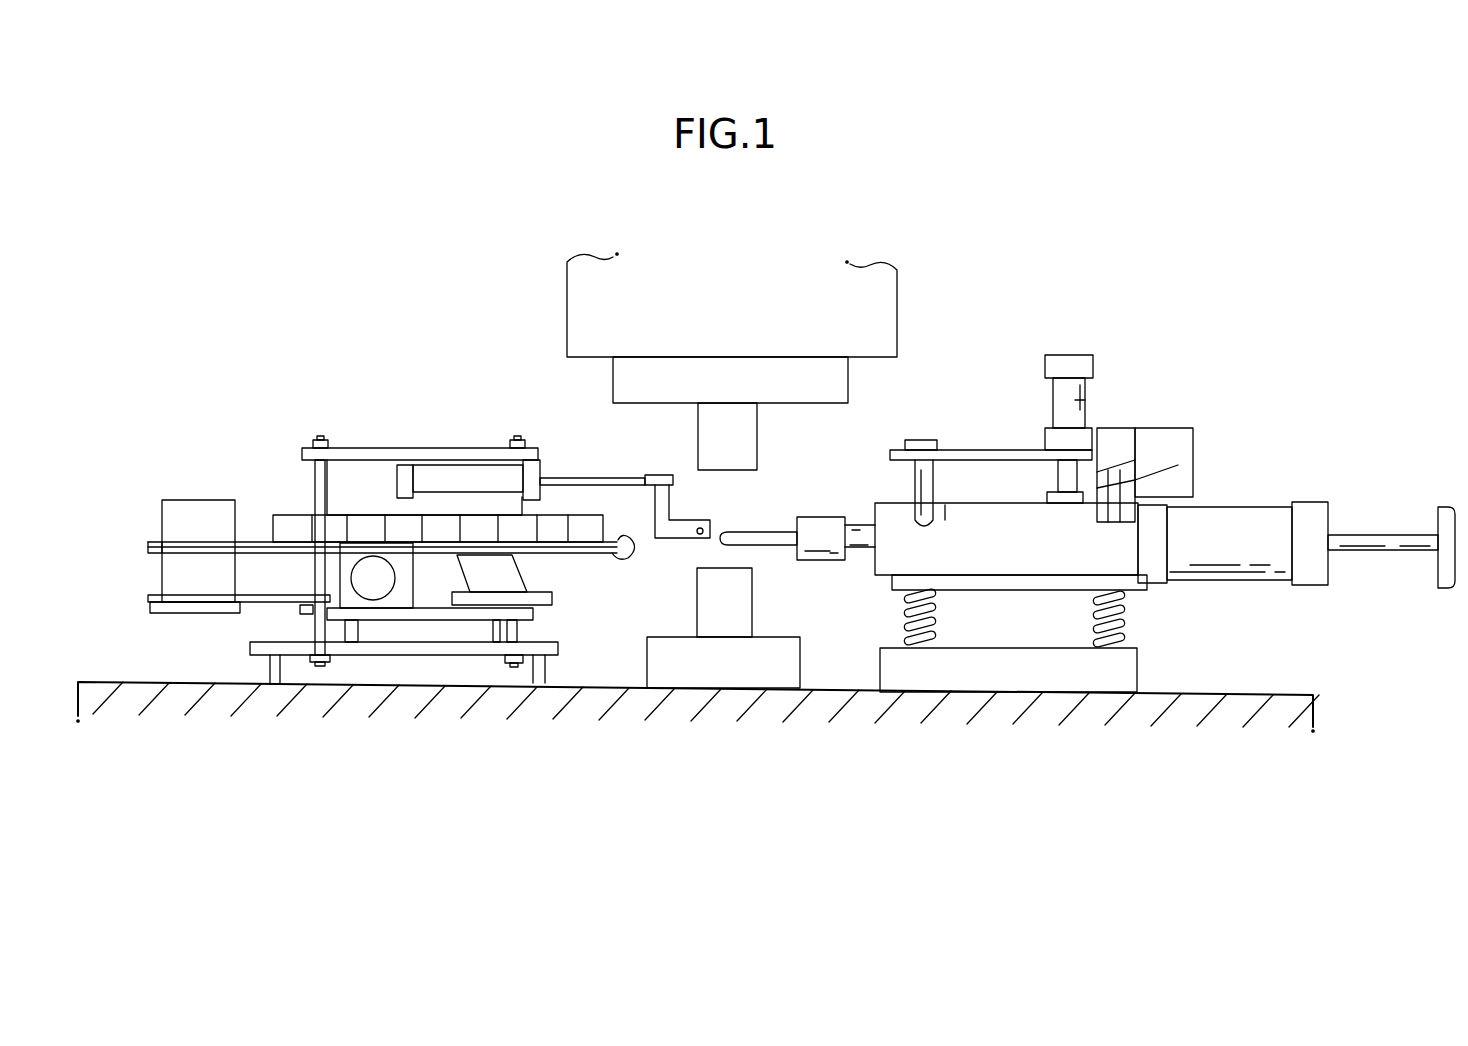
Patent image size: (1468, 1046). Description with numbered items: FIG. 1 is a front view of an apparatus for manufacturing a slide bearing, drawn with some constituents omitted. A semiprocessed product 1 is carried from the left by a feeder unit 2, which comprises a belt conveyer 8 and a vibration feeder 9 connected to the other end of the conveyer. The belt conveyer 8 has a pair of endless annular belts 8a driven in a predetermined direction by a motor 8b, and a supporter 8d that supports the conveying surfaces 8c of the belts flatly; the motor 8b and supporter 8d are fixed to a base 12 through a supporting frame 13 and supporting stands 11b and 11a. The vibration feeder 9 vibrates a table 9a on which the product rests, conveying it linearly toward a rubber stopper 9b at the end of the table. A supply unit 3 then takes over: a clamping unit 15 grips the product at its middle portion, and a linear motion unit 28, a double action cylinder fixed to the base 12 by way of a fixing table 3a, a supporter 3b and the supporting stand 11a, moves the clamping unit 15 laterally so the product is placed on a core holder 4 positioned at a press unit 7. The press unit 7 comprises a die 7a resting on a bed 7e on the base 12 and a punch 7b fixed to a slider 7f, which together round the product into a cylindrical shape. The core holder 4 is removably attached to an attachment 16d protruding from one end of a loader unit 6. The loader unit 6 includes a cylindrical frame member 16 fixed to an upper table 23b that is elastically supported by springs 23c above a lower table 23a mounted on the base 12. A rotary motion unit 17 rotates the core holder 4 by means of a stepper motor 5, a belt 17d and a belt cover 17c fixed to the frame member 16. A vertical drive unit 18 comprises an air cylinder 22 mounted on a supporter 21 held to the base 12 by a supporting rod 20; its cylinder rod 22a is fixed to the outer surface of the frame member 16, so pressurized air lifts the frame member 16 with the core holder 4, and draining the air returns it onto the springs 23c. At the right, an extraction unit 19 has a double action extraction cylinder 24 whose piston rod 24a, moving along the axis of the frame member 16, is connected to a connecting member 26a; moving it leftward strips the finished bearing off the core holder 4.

The semiprocessed product 1 is at (250, 523).
The feeder unit 2 is at (180, 553).
The supply unit 3 is at (488, 450).
The fixing table 3a is at (350, 455).
The supporter 3b is at (318, 490).
The core holder 4 is at (745, 533).
The stepper motor 5 is at (1188, 431).
The loader unit 6 is at (1000, 450).
The press unit 7 is at (822, 253).
The die 7a is at (752, 592).
The punch 7b is at (710, 440).
The bed 7e is at (735, 660).
The slider 7f is at (628, 383).
The belt conveyer 8 is at (152, 611).
The endless annular belts 8a is at (148, 598).
The motor 8b is at (400, 600).
The conveying surfaces 8c is at (152, 543).
The supporter 8d is at (148, 550).
The vibration feeder 9 is at (526, 577).
The table 9a is at (590, 560).
The stopper 9b is at (632, 548).
The supporting stand 11a is at (353, 650).
The supporting stand 11b is at (305, 615).
The base 12 is at (207, 693).
The supporting frame 13 is at (197, 560).
The clamping unit 15 is at (683, 520).
The frame member 16 is at (937, 513).
The attachment 16d is at (812, 527).
The rotary motion unit 17 is at (1165, 427).
The belt cover 17c is at (1113, 440).
The belt 17d is at (1178, 465).
The vertical drive unit 18 is at (1068, 354).
The extraction unit 19 is at (1305, 502).
The supporting rod 20 is at (917, 490).
The supporter 21 is at (948, 517).
The air cylinder 22 is at (1080, 403).
The cylinder rod 22a is at (1055, 475).
The lower table 23a is at (1018, 672).
The upper table 23b is at (893, 582).
The springs 23c is at (940, 610).
The extraction cylinder 24 is at (1228, 583).
The piston rod 24a is at (1373, 550).
The connecting member 26a is at (1442, 577).
The linear motion unit 28 is at (428, 478).